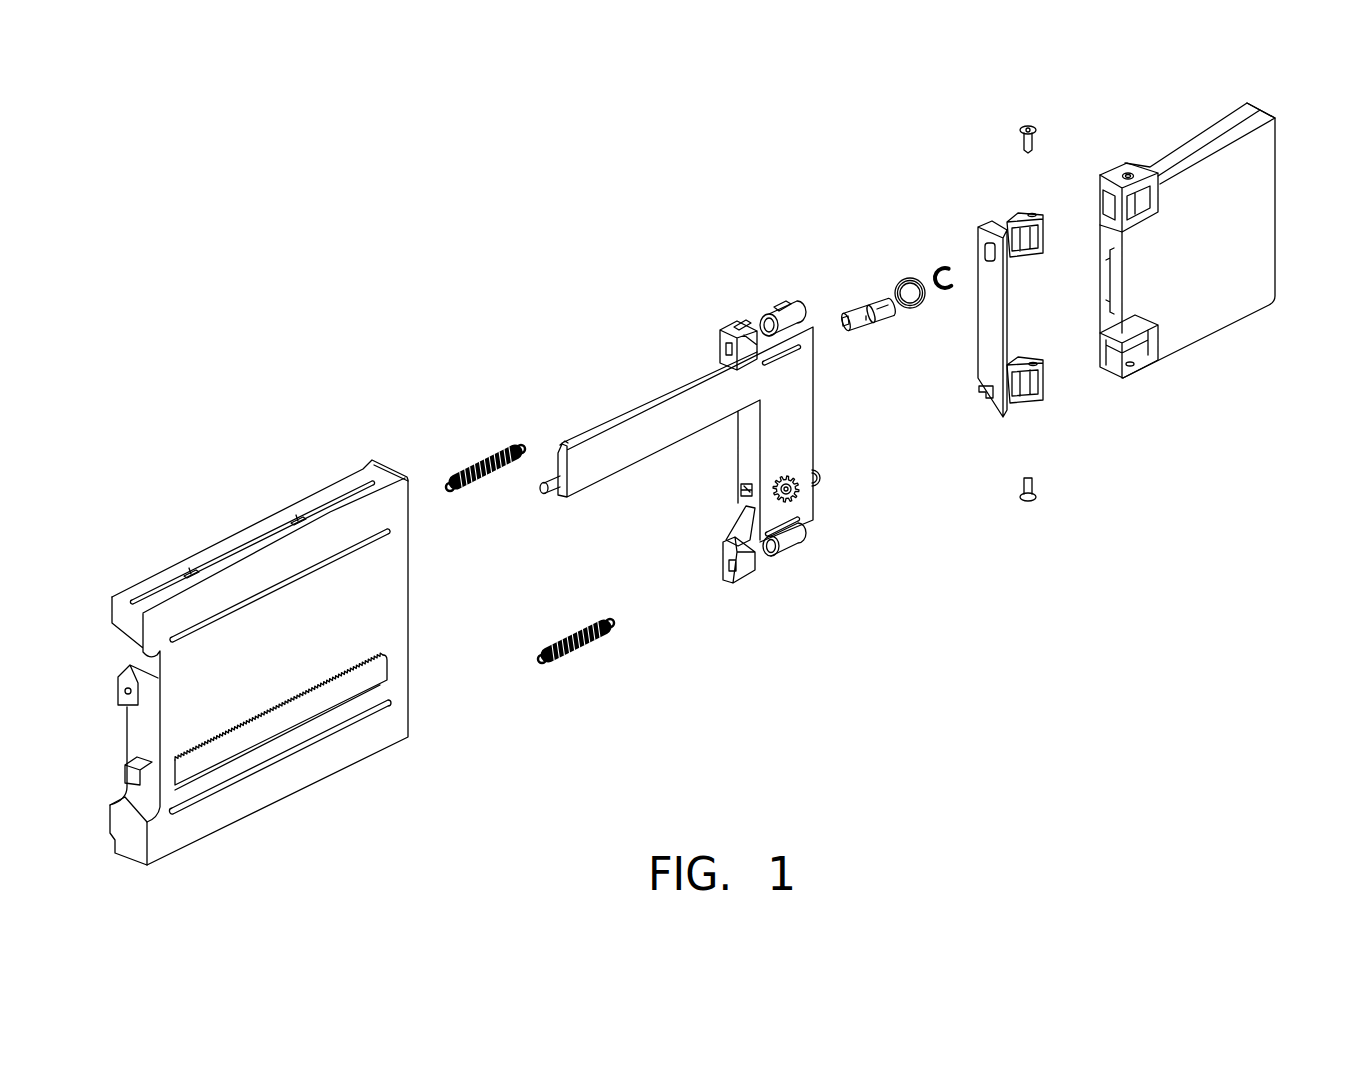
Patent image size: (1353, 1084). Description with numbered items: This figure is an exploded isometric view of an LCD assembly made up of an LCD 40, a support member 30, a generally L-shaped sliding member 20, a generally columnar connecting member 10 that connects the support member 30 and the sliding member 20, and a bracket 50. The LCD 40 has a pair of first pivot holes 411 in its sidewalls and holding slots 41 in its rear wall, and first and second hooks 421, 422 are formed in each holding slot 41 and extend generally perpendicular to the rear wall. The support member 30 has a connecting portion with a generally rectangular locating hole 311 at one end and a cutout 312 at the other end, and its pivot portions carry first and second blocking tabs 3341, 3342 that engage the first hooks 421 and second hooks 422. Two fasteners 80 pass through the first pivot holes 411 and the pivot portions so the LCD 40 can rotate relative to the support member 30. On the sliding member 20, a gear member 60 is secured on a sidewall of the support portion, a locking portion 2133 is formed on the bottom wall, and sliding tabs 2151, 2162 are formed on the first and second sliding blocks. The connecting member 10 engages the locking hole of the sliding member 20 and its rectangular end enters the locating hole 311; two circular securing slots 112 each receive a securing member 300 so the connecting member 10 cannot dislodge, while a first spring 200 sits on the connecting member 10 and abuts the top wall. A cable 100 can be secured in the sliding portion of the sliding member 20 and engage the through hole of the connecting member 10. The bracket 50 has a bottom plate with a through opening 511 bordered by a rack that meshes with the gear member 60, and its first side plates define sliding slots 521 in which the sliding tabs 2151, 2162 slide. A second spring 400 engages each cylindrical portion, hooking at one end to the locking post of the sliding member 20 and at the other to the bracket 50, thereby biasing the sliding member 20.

The connecting member 10 is at (890, 318).
The securing slots 112 is at (885, 320).
The sliding member 20 is at (721, 422).
The locking portion 2133 is at (746, 489).
The sliding tab 2151 is at (781, 301).
The sliding tab 2162 is at (740, 321).
The support member 30 is at (1039, 357).
The locating hole 311 is at (993, 259).
The cutout 312 is at (974, 388).
The first blocking tab 3341 is at (1018, 400).
The second blocking tab 3342 is at (1042, 380).
The LCD 40 is at (1144, 262).
The holding slot 41 is at (1085, 164).
The first pivot hole 411 is at (1123, 172).
The first hook 421 is at (1097, 207).
The second hook 422 is at (1140, 186).
The bracket 50 is at (306, 639).
The through opening 511 is at (368, 676).
The sliding slot 521 is at (323, 507).
The gear member 60 is at (797, 490).
The fastener 80 is at (1027, 128).
The cable 100 is at (548, 483).
The first spring 200 is at (912, 278).
The securing member 300 is at (947, 267).
The second spring 400 is at (577, 636).